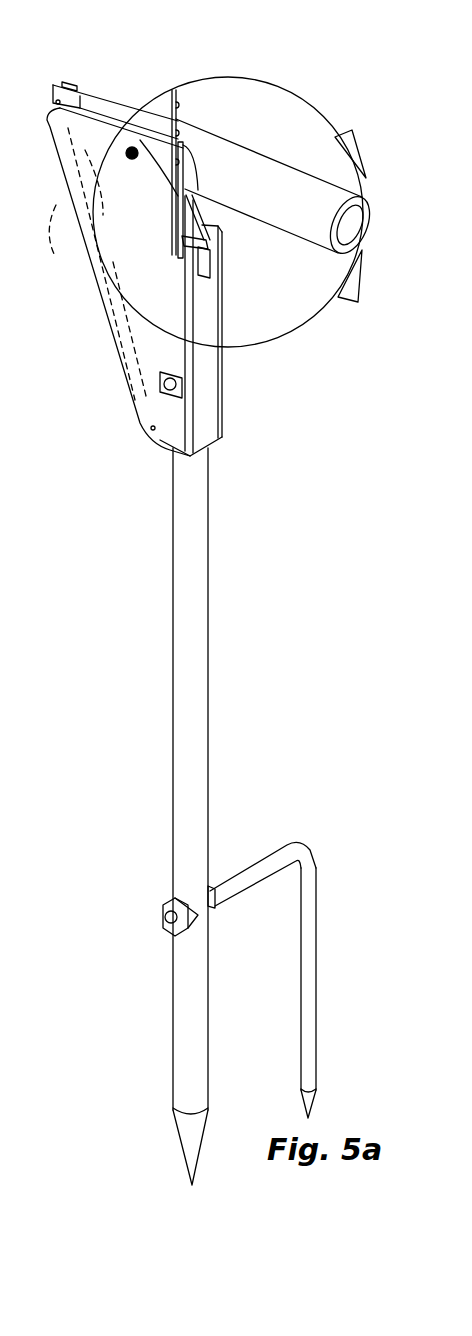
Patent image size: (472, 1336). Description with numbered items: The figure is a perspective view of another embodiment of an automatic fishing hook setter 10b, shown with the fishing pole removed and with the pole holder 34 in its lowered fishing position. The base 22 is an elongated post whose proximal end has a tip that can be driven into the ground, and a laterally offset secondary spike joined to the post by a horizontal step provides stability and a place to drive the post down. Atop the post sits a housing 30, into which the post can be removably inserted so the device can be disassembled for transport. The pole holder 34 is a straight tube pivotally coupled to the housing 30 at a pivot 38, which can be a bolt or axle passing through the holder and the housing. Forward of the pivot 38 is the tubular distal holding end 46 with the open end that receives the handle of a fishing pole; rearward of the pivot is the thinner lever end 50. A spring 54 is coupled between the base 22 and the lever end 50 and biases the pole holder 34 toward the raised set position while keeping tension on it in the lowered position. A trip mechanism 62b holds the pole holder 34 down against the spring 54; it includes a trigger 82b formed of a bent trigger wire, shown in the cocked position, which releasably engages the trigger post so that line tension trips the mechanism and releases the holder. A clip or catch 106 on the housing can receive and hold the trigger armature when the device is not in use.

The automatic fishing hook setter 10b is at (231, 816).
The base 22 is at (157, 816).
The housing 30 is at (112, 331).
The pole holder 34 is at (232, 160).
The pivot 38 is at (133, 147).
The distal holding end 46 is at (293, 177).
The lever end 50 is at (112, 108).
The spring 54 is at (52, 258).
The trip mechanism 62b is at (230, 251).
The trigger 82b is at (170, 212).
The clip or catch 106 is at (157, 390).